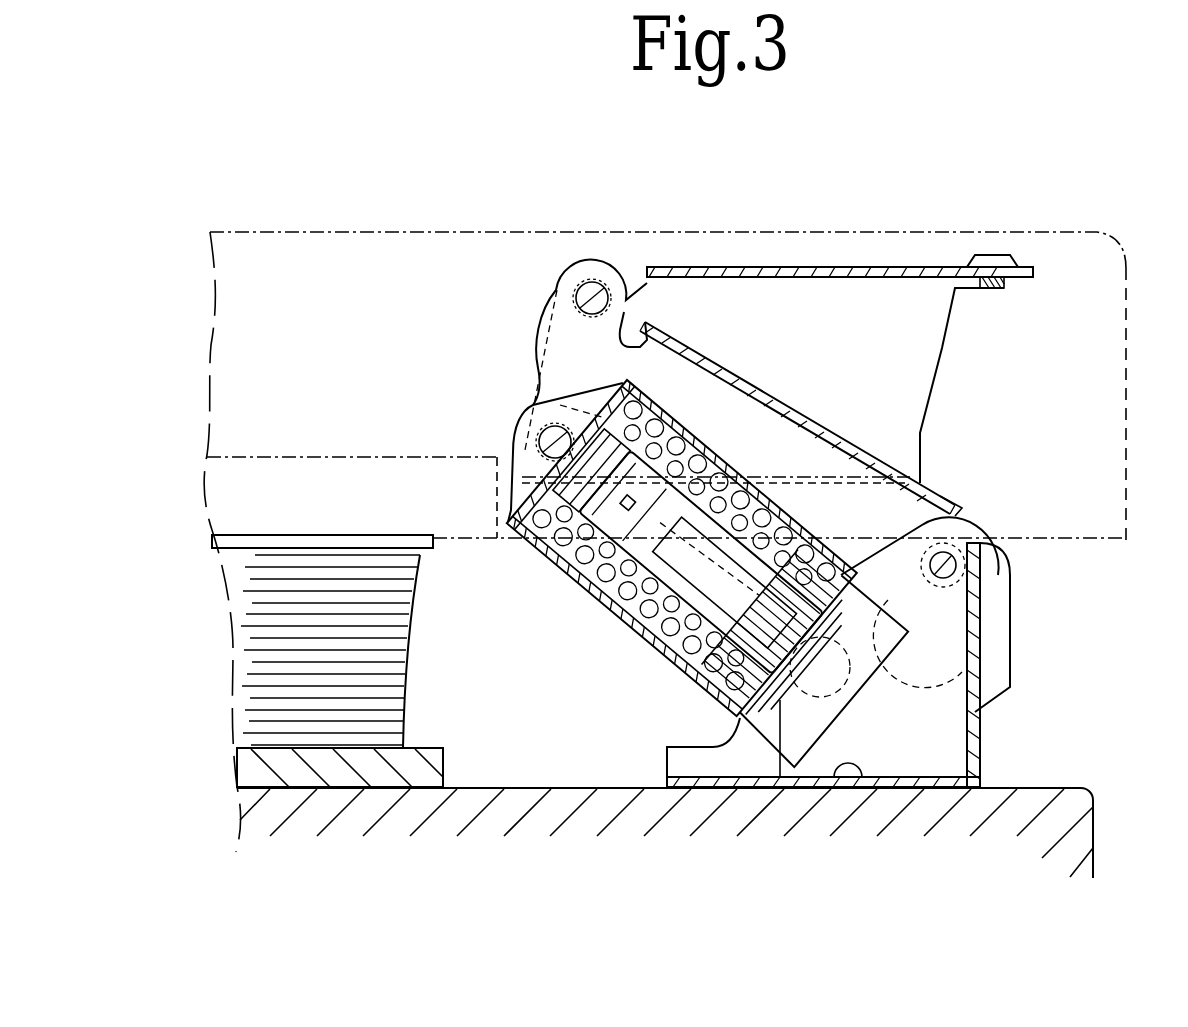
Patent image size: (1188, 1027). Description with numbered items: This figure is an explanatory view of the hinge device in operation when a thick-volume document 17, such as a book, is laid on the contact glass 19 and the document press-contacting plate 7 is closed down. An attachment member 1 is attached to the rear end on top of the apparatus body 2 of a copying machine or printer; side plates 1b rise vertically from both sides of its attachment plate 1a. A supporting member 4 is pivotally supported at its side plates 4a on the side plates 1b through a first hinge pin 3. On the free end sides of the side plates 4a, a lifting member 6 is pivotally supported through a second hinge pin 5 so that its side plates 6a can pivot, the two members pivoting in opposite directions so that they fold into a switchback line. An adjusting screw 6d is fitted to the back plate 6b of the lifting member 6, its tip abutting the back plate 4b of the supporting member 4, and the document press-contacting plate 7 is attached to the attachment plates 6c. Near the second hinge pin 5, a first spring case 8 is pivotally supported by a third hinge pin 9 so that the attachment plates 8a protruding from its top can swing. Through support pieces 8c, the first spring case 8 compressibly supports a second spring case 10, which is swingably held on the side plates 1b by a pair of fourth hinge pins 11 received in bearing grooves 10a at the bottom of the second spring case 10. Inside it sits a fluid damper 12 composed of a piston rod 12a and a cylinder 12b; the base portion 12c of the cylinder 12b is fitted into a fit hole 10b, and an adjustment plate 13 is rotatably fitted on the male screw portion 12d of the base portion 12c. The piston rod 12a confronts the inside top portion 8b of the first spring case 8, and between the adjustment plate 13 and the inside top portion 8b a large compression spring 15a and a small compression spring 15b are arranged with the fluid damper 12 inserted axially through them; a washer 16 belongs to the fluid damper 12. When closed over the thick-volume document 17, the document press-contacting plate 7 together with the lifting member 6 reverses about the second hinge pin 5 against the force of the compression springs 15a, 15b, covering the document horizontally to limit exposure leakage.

The attachment member 1 is at (868, 710).
The attachment plate 1a is at (870, 790).
The side plates 1b is at (942, 712).
The apparatus body 2 is at (1103, 812).
The first hinge pin 3 is at (953, 570).
The supporting member 4 is at (806, 419).
The side plates 4a is at (830, 462).
The back plate 4b is at (770, 400).
The second hinge pin 5 is at (578, 292).
The lifting member 6 is at (809, 320).
The side plates 6a is at (937, 349).
The back plate 6b is at (768, 265).
The attachment plates 6c is at (890, 468).
The adjusting screw 6d is at (1018, 263).
The document press-contacting plate 7 is at (608, 226).
The first spring case 8 is at (727, 549).
The attachment plates 8a is at (520, 432).
The inside top portion 8b is at (571, 455).
The support pieces 8c is at (625, 616).
The third hinge pin 9 is at (538, 410).
The second spring case 10 is at (818, 672).
The bearing grooves 10a is at (858, 694).
The fit hole 10b is at (772, 626).
The fourth hinge pins 11 is at (800, 662).
The fluid damper 12 is at (688, 551).
The piston rod 12a is at (591, 470).
The cylinder 12b is at (725, 582).
The base portion 12c is at (790, 790).
The male screw portion 12d is at (629, 502).
The adjustment plate 13 is at (712, 790).
The large compression spring 15a is at (724, 497).
The small compression spring 15b is at (643, 593).
The washer 16 is at (866, 625).
The thick-volume document 17 is at (250, 668).
The contact glass 19 is at (443, 760).